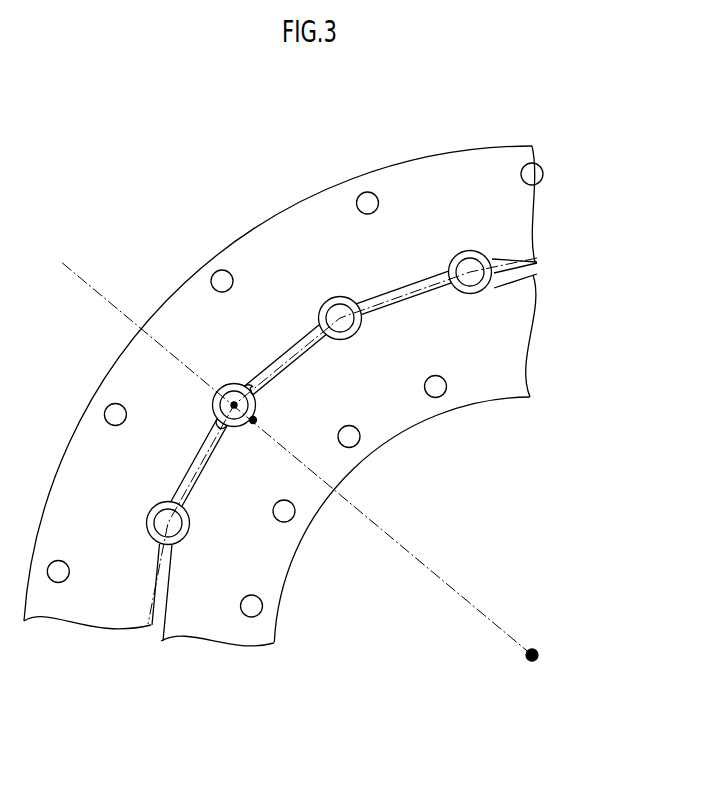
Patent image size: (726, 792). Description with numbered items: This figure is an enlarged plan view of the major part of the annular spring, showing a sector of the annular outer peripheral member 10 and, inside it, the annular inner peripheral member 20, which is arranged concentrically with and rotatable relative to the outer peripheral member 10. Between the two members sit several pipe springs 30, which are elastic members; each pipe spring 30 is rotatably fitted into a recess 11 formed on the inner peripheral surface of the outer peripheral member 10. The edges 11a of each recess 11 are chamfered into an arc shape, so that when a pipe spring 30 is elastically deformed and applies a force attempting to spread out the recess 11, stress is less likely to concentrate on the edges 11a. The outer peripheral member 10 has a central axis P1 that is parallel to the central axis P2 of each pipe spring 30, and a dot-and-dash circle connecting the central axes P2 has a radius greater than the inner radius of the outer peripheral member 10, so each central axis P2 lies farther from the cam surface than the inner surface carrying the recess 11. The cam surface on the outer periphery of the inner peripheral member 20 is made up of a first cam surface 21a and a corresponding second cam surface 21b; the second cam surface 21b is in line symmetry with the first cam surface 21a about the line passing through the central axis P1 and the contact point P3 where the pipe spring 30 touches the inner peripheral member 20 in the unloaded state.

The outer peripheral member 10 is at (410, 185).
The recess 11 is at (277, 364).
The edge 11a is at (268, 383).
The inner peripheral member 20 is at (478, 381).
The first cam surface 21a is at (273, 387).
The second cam surface 21b is at (226, 437).
The pipe spring 30 is at (210, 305).
The central axis of the outer peripheral member P1 is at (533, 662).
The central axis of the pipe spring P2 is at (236, 384).
The contact point P3 is at (253, 422).